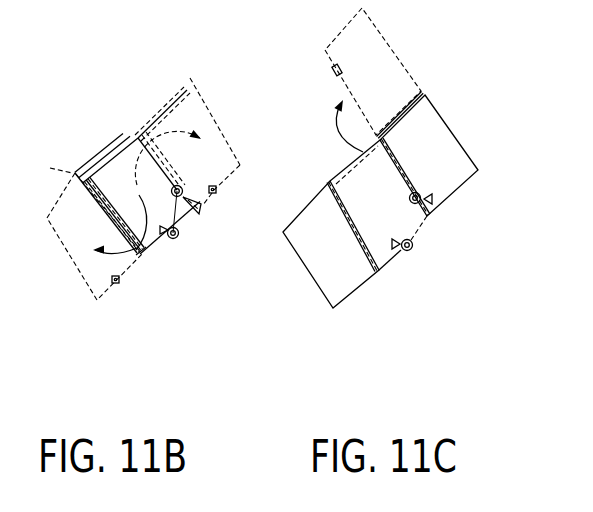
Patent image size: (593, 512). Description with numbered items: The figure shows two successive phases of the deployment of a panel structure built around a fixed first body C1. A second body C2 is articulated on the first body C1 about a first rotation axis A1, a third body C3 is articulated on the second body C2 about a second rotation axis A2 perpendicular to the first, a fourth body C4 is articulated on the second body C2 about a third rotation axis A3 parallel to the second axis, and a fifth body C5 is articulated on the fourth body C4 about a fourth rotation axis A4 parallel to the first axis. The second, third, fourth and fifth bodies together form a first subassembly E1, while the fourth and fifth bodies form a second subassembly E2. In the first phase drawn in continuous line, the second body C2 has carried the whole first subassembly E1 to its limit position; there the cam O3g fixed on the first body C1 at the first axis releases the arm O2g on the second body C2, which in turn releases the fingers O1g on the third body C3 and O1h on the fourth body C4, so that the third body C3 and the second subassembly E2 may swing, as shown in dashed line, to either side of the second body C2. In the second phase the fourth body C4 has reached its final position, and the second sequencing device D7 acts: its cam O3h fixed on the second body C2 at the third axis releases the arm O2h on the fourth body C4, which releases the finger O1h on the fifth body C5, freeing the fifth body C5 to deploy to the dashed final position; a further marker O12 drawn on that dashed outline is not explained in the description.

In FIG. 11B, the first subassembly E1 is at (99, 131).
In FIG. 11B, the second subassembly E2 is at (211, 108).
In FIG. 11B, the first rotation axis A1 is at (151, 268).
In FIG. 11B, the second rotation axis A2 is at (50, 168).
In FIG. 11B, the third rotation axis A3 is at (139, 128).
In FIG. 11B, the fourth rotation axis A4 is at (181, 85).
In FIG. 11C, the fourth rotation axis A4 is at (426, 91).
In FIG. 11B, the first member of the first sequencing device O1g is at (114, 288).
In FIG. 11B, the second member of the first sequencing device O2g is at (174, 240).
In FIG. 11B, the third member of the first sequencing device O3g is at (180, 238).
In FIG. 11B, the first member of the second sequencing device O1h is at (217, 189).
In FIG. 11B, the second member of the second sequencing device O2h is at (204, 210).
In FIG. 11B, the third member of the second sequencing device O3h is at (183, 189).
In FIG. 11B, the second sequencing device D7 is at (205, 220).
In FIG. 11B, the first body C1 is at (202, 293).
In FIG. 11C, the first body C1 is at (467, 301).
In FIG. 11C, the second body C2 is at (391, 262).
In FIG. 11B, the third body C3 is at (76, 274).
In FIG. 11C, the third body C3 is at (340, 306).
In FIG. 11C, the fourth body C4 is at (470, 145).
In FIG. 11C, the fifth body C5 is at (470, 206).
In FIG. 11C, the pivot between first and second components O12 is at (333, 66).